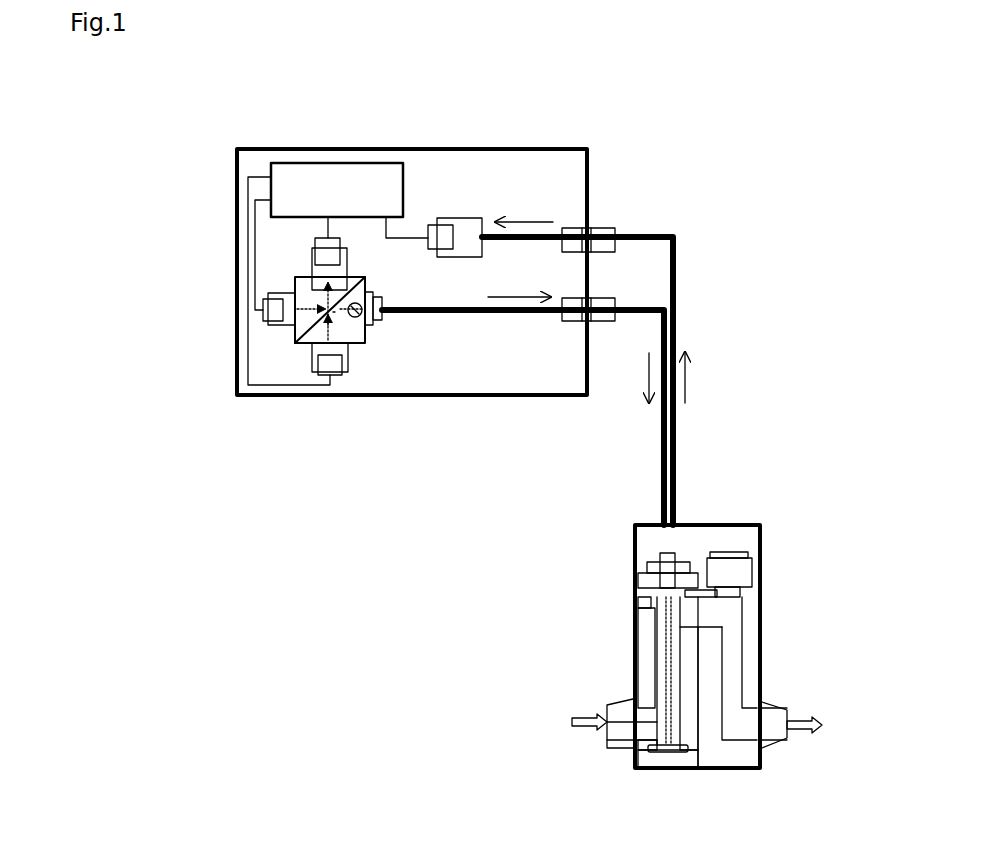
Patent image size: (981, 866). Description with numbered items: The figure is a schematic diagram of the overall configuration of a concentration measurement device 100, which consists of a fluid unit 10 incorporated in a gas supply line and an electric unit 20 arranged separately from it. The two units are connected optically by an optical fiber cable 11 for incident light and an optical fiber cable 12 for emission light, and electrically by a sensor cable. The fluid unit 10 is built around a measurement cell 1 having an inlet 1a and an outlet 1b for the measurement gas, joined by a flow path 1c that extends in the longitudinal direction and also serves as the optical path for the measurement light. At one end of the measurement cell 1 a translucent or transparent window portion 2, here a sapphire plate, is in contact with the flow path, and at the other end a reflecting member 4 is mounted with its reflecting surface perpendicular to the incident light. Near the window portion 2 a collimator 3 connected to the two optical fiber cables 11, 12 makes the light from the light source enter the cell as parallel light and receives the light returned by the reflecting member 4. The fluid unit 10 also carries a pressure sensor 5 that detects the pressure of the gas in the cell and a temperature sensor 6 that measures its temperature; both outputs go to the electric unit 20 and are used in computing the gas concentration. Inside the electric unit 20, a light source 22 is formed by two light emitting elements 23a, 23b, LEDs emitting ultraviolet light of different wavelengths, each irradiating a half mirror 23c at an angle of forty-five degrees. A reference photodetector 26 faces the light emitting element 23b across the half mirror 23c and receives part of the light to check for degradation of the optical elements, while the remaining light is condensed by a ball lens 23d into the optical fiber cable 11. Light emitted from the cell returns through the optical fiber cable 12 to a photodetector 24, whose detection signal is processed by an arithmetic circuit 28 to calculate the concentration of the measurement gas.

The concentration measurement device 100 is at (736, 175).
The electric unit 20 is at (533, 147).
The arithmetic circuit 28 is at (345, 163).
The photodetector 24 is at (442, 218).
The reference photodetector 26 is at (312, 265).
The light source 22 is at (292, 354).
The light emitting element 23a is at (337, 375).
The light emitting element 23b is at (266, 320).
The half mirror 23c is at (336, 313).
The ball lens 23d is at (374, 318).
The fluid unit 10 is at (696, 632).
The optical fiber cable for incident light 11 is at (660, 448).
The optical fiber cable for emission light 12 is at (677, 443).
The measurement cell 1 is at (633, 623).
The inlet 1a is at (650, 727).
The outlet 1b is at (688, 604).
The flow path 1c is at (646, 656).
The window portion 2 is at (640, 578).
The collimator 3 is at (657, 557).
The reflecting member 4 is at (672, 752).
The pressure sensor 5 is at (750, 568).
The temperature sensor 6 is at (633, 605).